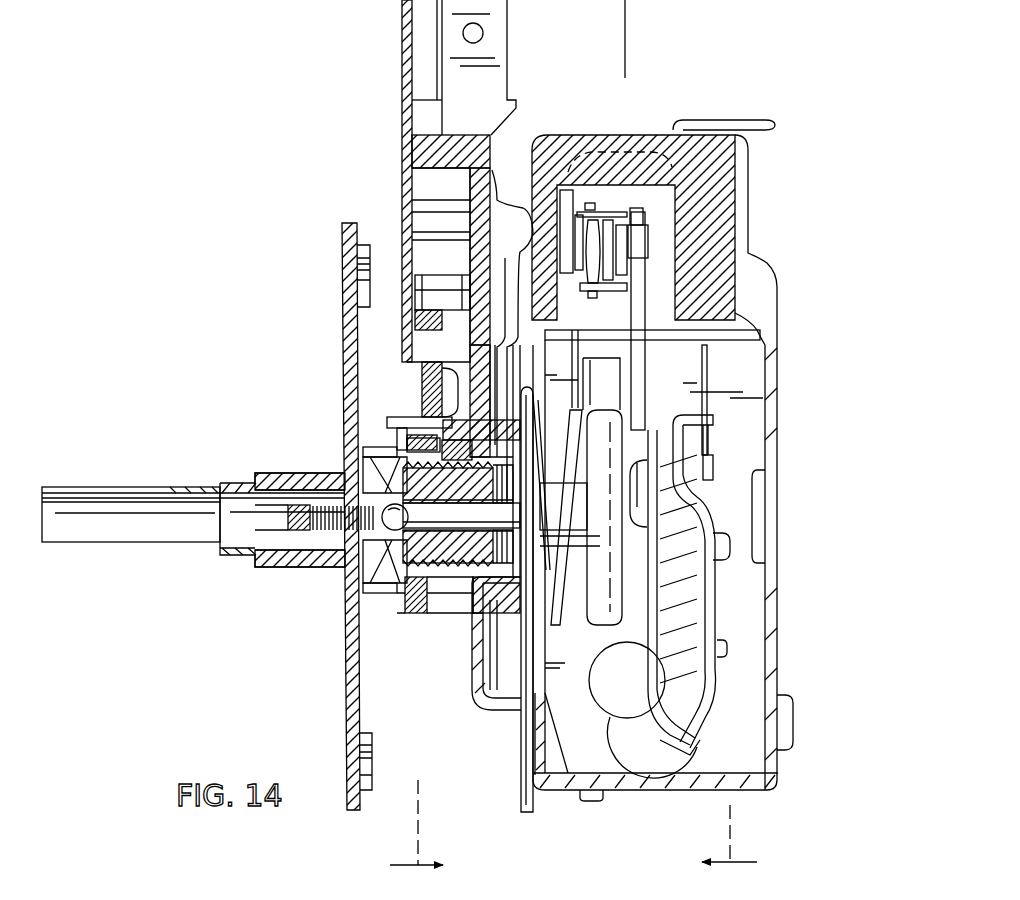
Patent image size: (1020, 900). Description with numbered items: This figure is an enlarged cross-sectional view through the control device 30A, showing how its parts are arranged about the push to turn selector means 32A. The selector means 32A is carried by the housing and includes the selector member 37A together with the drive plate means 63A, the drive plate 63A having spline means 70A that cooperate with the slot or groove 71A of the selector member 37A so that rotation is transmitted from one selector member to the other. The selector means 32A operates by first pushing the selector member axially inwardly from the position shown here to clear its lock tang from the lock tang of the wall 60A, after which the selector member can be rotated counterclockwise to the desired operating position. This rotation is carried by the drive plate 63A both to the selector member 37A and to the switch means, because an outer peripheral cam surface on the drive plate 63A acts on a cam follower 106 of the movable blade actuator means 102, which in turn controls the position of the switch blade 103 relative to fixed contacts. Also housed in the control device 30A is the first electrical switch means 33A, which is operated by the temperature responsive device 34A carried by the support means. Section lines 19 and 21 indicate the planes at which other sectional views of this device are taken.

The control device 30A is at (742, 75).
The switch blade 103 is at (438, 275).
The first electrical switch means 33A is at (662, 247).
The temperature responsive device 34A is at (630, 424).
The cam follower 106 is at (398, 415).
The movable blade actuator means 102 is at (430, 395).
The spline means 70A is at (373, 423).
The slot or groove 71A is at (347, 440).
The push to turn selector means 32A is at (317, 580).
The drive plate means 63A is at (396, 612).
The selector member 37A is at (455, 590).
The wall 60A is at (347, 695).
The section line 19 is at (435, 828).
The section line 21 is at (729, 851).